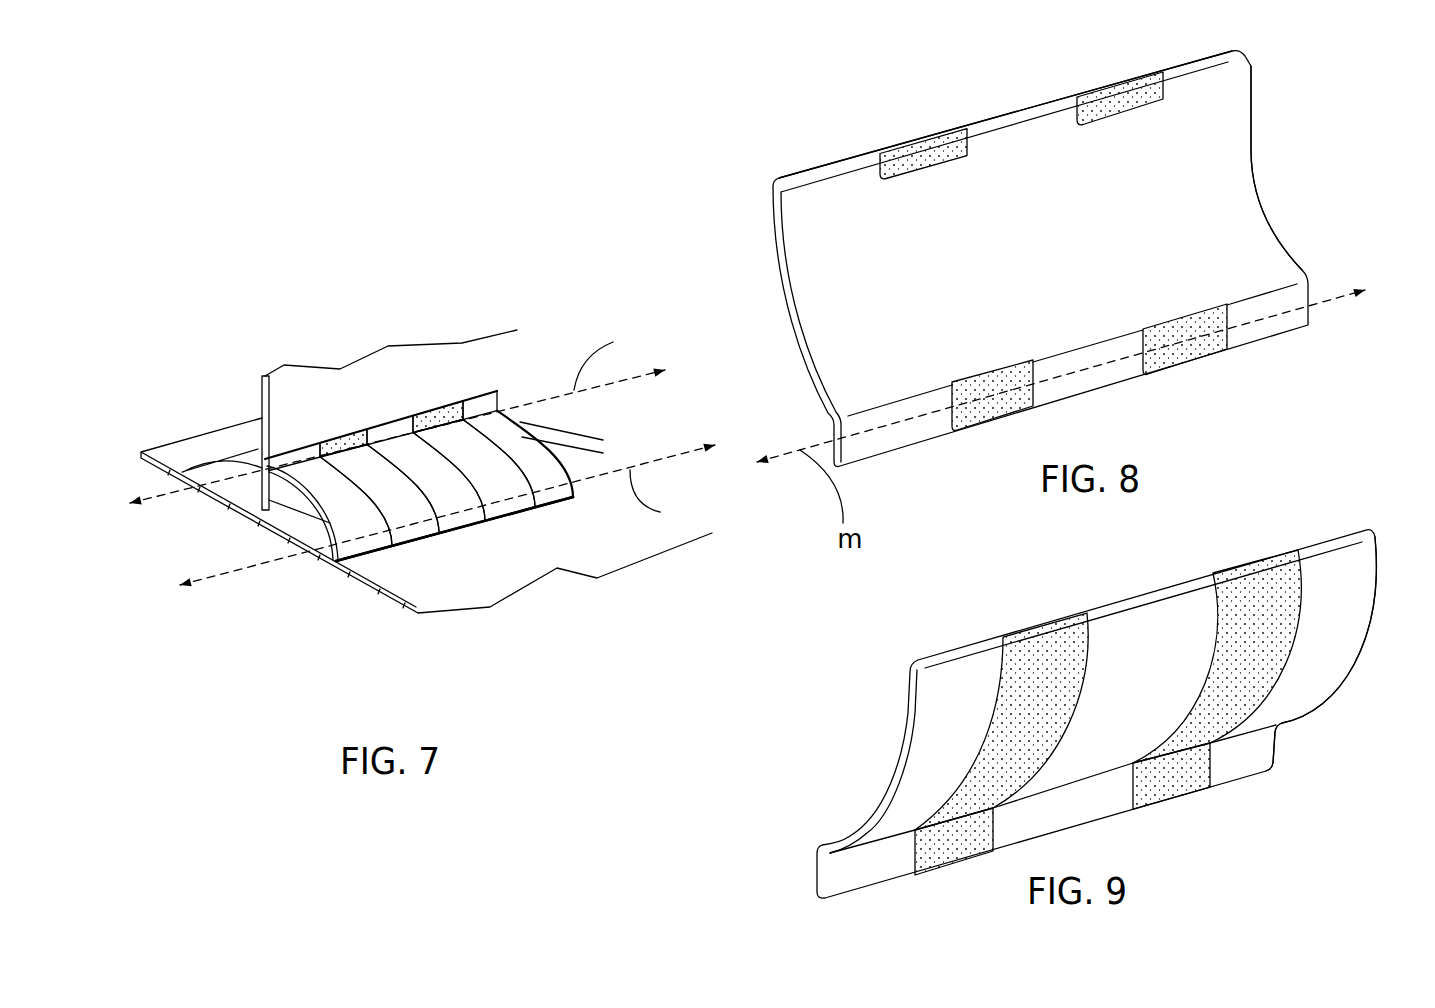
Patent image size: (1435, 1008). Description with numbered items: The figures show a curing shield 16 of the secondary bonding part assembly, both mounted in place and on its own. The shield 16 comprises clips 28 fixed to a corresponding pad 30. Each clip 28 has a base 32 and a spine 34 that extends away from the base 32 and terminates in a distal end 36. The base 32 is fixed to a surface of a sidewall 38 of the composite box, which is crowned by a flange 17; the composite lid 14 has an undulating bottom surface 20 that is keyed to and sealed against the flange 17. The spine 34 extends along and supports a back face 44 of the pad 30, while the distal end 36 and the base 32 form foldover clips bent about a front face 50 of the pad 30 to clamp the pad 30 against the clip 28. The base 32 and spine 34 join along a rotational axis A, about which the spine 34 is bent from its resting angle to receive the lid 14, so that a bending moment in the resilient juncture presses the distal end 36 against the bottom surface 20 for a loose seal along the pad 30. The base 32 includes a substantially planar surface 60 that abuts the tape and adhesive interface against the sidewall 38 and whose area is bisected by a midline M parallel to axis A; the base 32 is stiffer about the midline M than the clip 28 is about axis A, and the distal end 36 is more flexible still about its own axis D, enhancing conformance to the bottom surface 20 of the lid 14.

In FIG. 7, the composite lid 14 is at (183, 440).
In FIG. 7, the curing shield 16 is at (434, 490).
In FIG. 8, the curing shield 16 is at (752, 200).
In FIG. 9, the curing shield 16 is at (806, 801).
In FIG. 7, the flange 17 is at (238, 485).
In FIG. 7, the bottom surface 20 is at (425, 582).
In FIG. 8, the clip 28 is at (1005, 91).
In FIG. 9, the clip 28 is at (1000, 716).
In FIG. 9, the pad 30 is at (1370, 635).
In FIG. 7, the base 32 is at (433, 410).
In FIG. 8, the base 32 is at (1070, 408).
In FIG. 9, the base 32 is at (943, 853).
In FIG. 7, the spine 34 is at (480, 453).
In FIG. 9, the spine 34 is at (1097, 657).
In FIG. 7, the distal end 36 is at (513, 520).
In FIG. 8, the distal end 36 is at (943, 137).
In FIG. 9, the distal end 36 is at (1050, 633).
In FIG. 7, the sidewall 38 is at (340, 396).
In FIG. 9, the back face 44 is at (1295, 698).
In FIG. 8, the front face 50 is at (1243, 205).
In FIG. 8, the planar surface 60 is at (982, 410).